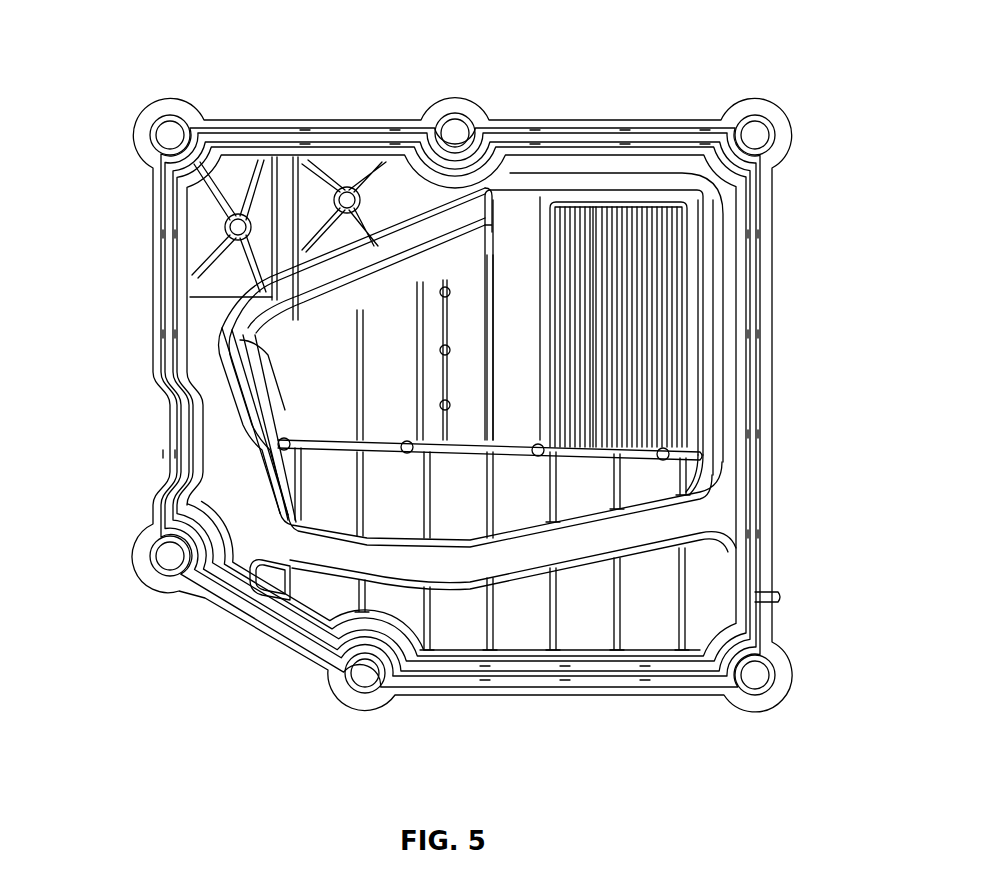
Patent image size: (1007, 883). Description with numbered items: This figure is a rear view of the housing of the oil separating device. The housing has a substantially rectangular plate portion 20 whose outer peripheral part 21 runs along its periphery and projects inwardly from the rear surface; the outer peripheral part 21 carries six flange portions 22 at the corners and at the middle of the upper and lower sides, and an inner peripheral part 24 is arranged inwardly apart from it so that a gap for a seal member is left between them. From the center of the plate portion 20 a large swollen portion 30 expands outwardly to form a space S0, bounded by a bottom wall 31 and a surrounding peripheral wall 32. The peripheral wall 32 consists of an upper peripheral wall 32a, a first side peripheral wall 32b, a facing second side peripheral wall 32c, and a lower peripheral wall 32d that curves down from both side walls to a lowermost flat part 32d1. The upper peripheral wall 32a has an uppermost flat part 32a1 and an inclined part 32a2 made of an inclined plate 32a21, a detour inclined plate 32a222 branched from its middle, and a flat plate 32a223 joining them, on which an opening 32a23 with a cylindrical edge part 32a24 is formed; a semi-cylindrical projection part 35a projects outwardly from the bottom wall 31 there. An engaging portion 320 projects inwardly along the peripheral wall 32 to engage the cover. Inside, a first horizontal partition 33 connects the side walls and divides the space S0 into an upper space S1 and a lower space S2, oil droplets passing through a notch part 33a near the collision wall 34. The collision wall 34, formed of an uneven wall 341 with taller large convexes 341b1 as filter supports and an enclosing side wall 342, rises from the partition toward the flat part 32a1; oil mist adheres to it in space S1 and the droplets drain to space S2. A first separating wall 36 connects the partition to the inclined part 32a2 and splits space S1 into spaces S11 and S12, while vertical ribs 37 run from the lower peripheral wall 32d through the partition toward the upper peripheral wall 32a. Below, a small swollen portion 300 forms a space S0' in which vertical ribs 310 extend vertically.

The plate portion 20 is at (213, 328).
The outer peripheral part 21 is at (166, 214).
The flange portions 22 is at (142, 127).
The inner peripheral part 24 is at (203, 320).
The large swollen portion 30 is at (545, 210).
The bottom wall 31 is at (662, 532).
The peripheral wall 32 is at (703, 410).
The upper peripheral wall 32a is at (660, 197).
The flat part 32a1 is at (683, 190).
The inclined part 32a2 is at (388, 250).
The inclined plate 32a21 is at (378, 330).
The detour inclined plate 32a222 is at (428, 300).
The flat plate 32a223 is at (325, 335).
The opening 32a23 is at (292, 404).
The edge part 32a24 is at (290, 372).
The first side peripheral wall 32b is at (713, 322).
The second side peripheral wall 32c is at (320, 455).
The lower peripheral wall 32d is at (335, 545).
The flat part 32d1 is at (370, 655).
The first horizontal partition 33 is at (250, 562).
The notch part 33a is at (650, 487).
The collision wall 34 is at (697, 213).
The uneven wall 341 is at (667, 373).
The large convexes 341b1 is at (640, 271).
The side wall 342 is at (600, 205).
The semi-cylindrical projection part 35a is at (268, 462).
The first separating wall 36 is at (470, 232).
The vertical ribs 37 is at (238, 214).
The small swollen portion 300 is at (745, 598).
The vertical ribs 310 is at (455, 640).
The engaging portion 320 is at (705, 594).
The space S0 is at (513, 585).
The space S0' is at (657, 659).
The space S1 is at (512, 255).
The space S2 is at (447, 510).
The space S11 is at (700, 456).
The space S12 is at (358, 340).